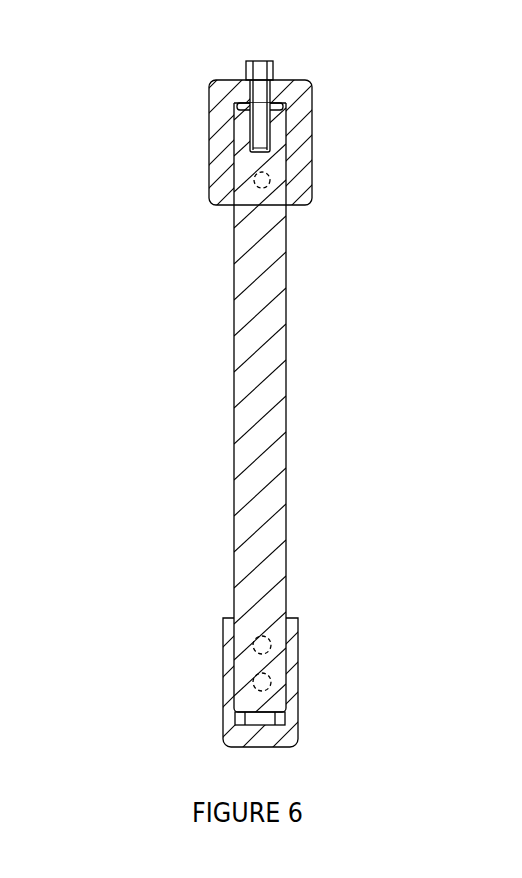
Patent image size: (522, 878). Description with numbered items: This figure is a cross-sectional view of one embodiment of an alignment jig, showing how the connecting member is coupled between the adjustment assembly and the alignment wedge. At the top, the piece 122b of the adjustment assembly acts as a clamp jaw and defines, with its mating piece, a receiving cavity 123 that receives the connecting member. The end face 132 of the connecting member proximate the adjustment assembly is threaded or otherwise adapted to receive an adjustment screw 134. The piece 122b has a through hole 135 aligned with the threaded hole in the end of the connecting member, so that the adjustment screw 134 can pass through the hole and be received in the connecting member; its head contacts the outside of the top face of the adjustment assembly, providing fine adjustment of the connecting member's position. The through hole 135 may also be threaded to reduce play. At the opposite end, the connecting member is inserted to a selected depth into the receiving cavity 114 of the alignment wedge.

The receiving cavity 114 is at (283, 658).
The piece 122b is at (209, 143).
The receiving cavity 123 is at (287, 162).
The end face 132 is at (270, 120).
The adjustment screw 134 is at (276, 60).
The through hole 135 is at (270, 93).